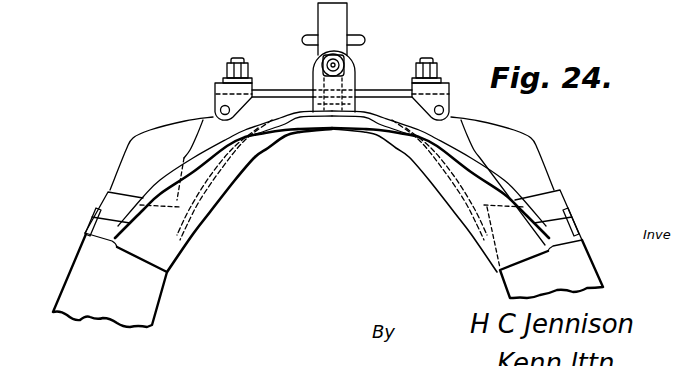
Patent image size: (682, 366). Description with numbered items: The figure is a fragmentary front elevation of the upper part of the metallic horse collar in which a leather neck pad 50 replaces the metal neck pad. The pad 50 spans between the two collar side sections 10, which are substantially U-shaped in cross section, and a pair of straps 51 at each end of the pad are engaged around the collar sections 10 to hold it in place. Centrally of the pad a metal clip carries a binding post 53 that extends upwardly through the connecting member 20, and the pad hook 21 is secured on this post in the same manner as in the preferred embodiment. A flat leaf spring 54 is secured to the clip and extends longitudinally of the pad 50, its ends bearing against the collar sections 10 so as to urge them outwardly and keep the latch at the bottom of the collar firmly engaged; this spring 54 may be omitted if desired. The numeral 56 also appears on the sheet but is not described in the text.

The collar side section 10 is at (153, 304).
The connecting member 20 is at (275, 90).
The pad hook 21 is at (348, 18).
The leather neck pad 50 is at (442, 184).
The strap 51 is at (95, 212).
The binding post 53 is at (332, 100).
The flat leaf spring 54 is at (361, 98).
The member 56 is at (106, 7).